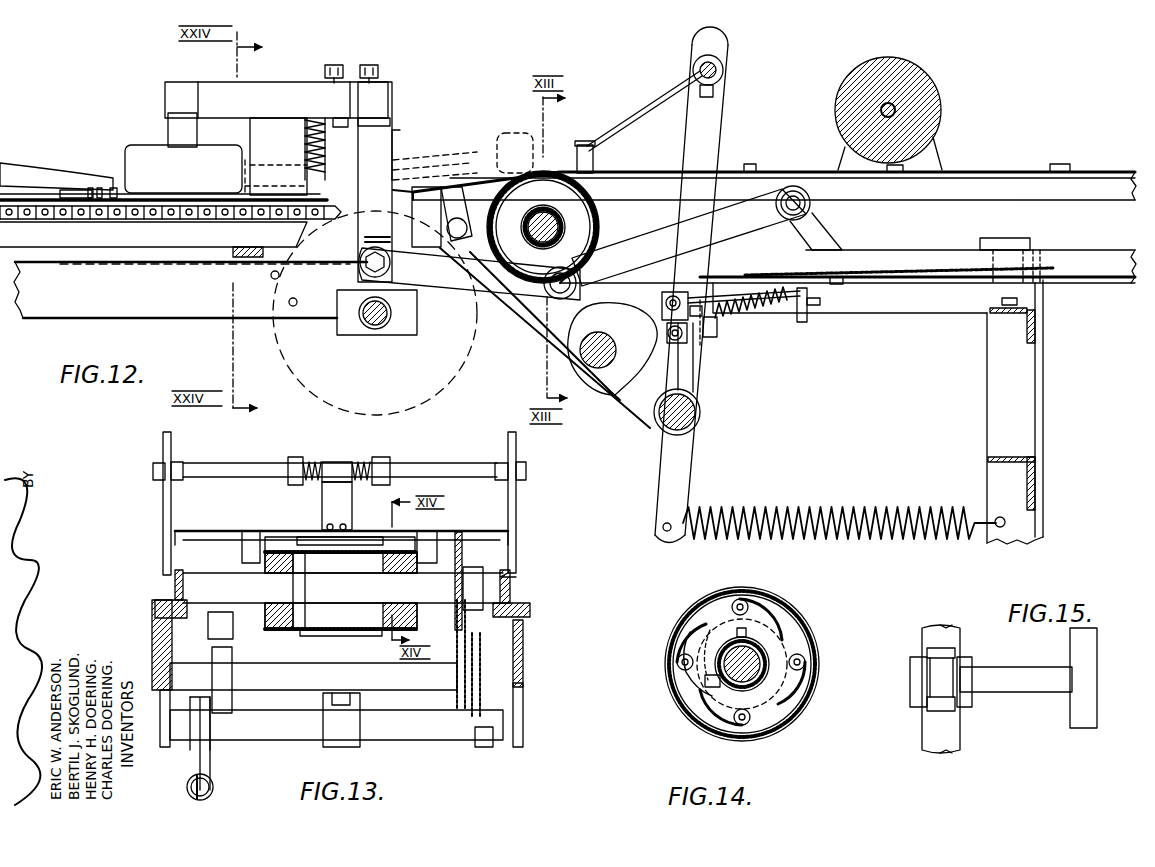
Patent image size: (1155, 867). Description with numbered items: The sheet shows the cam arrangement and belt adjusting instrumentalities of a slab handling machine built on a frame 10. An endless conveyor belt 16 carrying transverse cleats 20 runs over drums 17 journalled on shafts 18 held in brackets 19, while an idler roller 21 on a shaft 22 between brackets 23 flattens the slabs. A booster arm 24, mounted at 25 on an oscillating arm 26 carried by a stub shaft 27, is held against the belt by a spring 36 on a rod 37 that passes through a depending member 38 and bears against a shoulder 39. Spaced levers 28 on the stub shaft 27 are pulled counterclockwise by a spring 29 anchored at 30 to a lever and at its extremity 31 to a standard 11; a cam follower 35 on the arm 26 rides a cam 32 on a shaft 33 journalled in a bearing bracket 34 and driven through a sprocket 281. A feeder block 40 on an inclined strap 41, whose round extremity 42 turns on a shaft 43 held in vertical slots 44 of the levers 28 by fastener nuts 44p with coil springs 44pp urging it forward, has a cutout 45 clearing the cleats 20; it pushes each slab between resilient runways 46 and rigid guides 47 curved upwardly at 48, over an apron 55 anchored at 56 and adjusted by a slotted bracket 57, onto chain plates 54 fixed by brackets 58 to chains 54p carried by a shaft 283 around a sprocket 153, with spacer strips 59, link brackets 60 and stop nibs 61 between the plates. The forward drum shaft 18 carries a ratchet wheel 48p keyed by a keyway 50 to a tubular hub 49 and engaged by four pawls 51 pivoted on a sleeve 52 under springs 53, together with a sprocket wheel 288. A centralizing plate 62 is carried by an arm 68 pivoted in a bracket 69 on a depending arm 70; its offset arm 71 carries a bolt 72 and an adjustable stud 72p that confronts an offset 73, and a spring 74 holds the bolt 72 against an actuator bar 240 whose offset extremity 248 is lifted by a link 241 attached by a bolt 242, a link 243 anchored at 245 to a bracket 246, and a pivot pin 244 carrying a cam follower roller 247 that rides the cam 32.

In FIG. 12, the frame 10 is at (63, 318).
In FIG. 13, the frame 10 is at (152, 620).
In FIG. 12, the standard 11 is at (1045, 512).
In FIG. 12, the endless conveyor belt 16 is at (996, 172).
In FIG. 13, the endless conveyor belt 16 is at (285, 622).
In FIG. 12, the drum 17 is at (593, 193).
In FIG. 13, the drum 17 is at (306, 615).
In FIG. 14, the drum 17 is at (760, 635).
In FIG. 12, the shaft 18 is at (562, 226).
In FIG. 13, the shaft 18 is at (420, 607).
In FIG. 14, the shaft 18 is at (755, 660).
In FIG. 13, the bracket 19 is at (172, 590).
In FIG. 12, the cleats 20 is at (750, 164).
In FIG. 13, the cleats 20 is at (352, 540).
In FIG. 12, the idler roller 21 is at (930, 95).
In FIG. 12, the shaft 22 is at (890, 103).
In FIG. 12, the brackets 23 is at (937, 160).
In FIG. 12, the booster arm 24 is at (762, 305).
In FIG. 15, the booster arm 24 is at (1013, 675).
In FIG. 12, the mounting 25 is at (664, 297).
In FIG. 15, the mounting 25 is at (950, 655).
In FIG. 12, the oscillating arm 26 is at (690, 365).
In FIG. 13, the oscillating arm 26 is at (362, 658).
In FIG. 15, the oscillating arm 26 is at (922, 700).
In FIG. 12, the stub shaft 27 is at (700, 402).
In FIG. 13, the stub shaft 27 is at (402, 722).
In FIG. 15, the stub shaft 27 is at (965, 722).
In FIG. 12, the levers 28 is at (730, 95).
In FIG. 13, the levers 28 is at (167, 533).
In FIG. 12, the spring 29 is at (826, 510).
In FIG. 13, the spring 29 is at (210, 785).
In FIG. 12, the spring anchor 30 is at (660, 525).
In FIG. 13, the spring anchor 30 is at (215, 795).
In FIG. 12, the spring extremity 31 is at (1002, 517).
In FIG. 12, the cam 32 is at (620, 398).
In FIG. 13, the cam 32 is at (228, 700).
In FIG. 12, the shaft 33 is at (580, 360).
In FIG. 13, the shaft 33 is at (255, 680).
In FIG. 12, the bearing bracket 34 is at (545, 322).
In FIG. 13, the bearing bracket 34 is at (165, 750).
In FIG. 12, the cam follower 35 is at (700, 333).
In FIG. 12, the spring 36 is at (786, 320).
In FIG. 12, the rod 37 is at (773, 318).
In FIG. 12, the depending member 38 is at (806, 318).
In FIG. 12, the shoulder 39 is at (718, 330).
In FIG. 12, the feeder block 40 is at (580, 160).
In FIG. 13, the feeder block 40 is at (270, 540).
In FIG. 12, the inclined strap 41 is at (640, 120).
In FIG. 13, the inclined strap 41 is at (322, 511).
In FIG. 12, the round extremity 42 is at (716, 64).
In FIG. 13, the round extremity 42 is at (338, 462).
In FIG. 12, the shaft 43 is at (718, 60).
In FIG. 13, the shaft 43 is at (420, 465).
In FIG. 12, the vertical slots 44 is at (712, 95).
In FIG. 13, the fastener nuts 44p is at (160, 465).
In FIG. 13, the coil springs 44pp is at (293, 458).
In FIG. 13, the cut out 45 is at (305, 540).
In FIG. 12, the runways 46 is at (412, 187).
In FIG. 12, the guides 47 is at (24, 163).
In FIG. 12, the arcuate curve 48 is at (497, 150).
In FIG. 14, the ratchet wheel 48p is at (705, 683).
In FIG. 14, the tubular hub 49 is at (795, 632).
In FIG. 14, the keyway 50 is at (770, 630).
In FIG. 14, the pawls 51 is at (760, 605).
In FIG. 14, the sleeve 52 is at (680, 680).
In FIG. 14, the springs 53 is at (672, 660).
In FIG. 12, the chain plates 54 is at (68, 190).
In FIG. 12, the chains 54p is at (55, 218).
In FIG. 12, the apron 55 is at (478, 165).
In FIG. 12, the anchor 56 is at (447, 222).
In FIG. 12, the slotted bracket 57 is at (443, 252).
In FIG. 12, the brackets 58 is at (30, 219).
In FIG. 12, the spacer strips 59 is at (100, 188).
In FIG. 12, the link brackets 60 is at (103, 219).
In FIG. 12, the upstanding nibs 61 is at (88, 188).
In FIG. 12, the upstanding plate 62 is at (142, 150).
In FIG. 12, the arm 68 is at (178, 133).
In FIG. 12, the bracket 69 is at (262, 128).
In FIG. 12, the depending arm 70 is at (260, 157).
In FIG. 12, the offset arm 71 is at (388, 118).
In FIG. 12, the actuator bolt 72 is at (368, 65).
In FIG. 12, the threaded stud 72p is at (332, 65).
In FIG. 12, the offset 73 is at (341, 118).
In FIG. 12, the spring 74 is at (305, 154).
In FIG. 12, the sprocket 153 is at (283, 364).
In FIG. 12, the actuator bar 240 is at (397, 185).
In FIG. 12, the link 241 is at (455, 280).
In FIG. 13, the link 241 is at (215, 612).
In FIG. 12, the bolt 242 is at (360, 262).
In FIG. 12, the link 243 is at (645, 250).
In FIG. 13, the link 243 is at (225, 545).
In FIG. 12, the pivot pin 244 is at (568, 283).
In FIG. 12, the pivot anchor 245 is at (793, 186).
In FIG. 12, the bracket 246 is at (832, 242).
In FIG. 12, the cam follower roller 247 is at (544, 283).
In FIG. 13, the cam follower roller 247 is at (300, 606).
In FIG. 12, the offset extremity 248 is at (395, 140).
In FIG. 13, the sprocket 281 is at (490, 660).
In FIG. 12, the shaft 283 is at (374, 330).
In FIG. 13, the sprocket wheel 288 is at (483, 556).